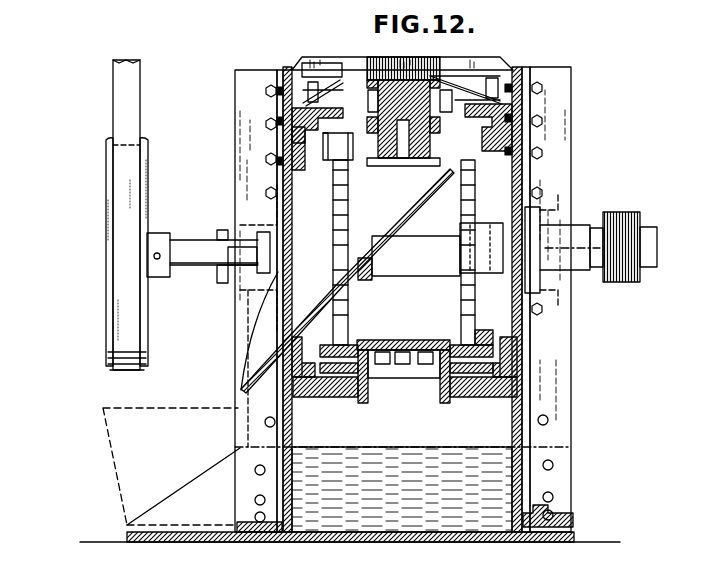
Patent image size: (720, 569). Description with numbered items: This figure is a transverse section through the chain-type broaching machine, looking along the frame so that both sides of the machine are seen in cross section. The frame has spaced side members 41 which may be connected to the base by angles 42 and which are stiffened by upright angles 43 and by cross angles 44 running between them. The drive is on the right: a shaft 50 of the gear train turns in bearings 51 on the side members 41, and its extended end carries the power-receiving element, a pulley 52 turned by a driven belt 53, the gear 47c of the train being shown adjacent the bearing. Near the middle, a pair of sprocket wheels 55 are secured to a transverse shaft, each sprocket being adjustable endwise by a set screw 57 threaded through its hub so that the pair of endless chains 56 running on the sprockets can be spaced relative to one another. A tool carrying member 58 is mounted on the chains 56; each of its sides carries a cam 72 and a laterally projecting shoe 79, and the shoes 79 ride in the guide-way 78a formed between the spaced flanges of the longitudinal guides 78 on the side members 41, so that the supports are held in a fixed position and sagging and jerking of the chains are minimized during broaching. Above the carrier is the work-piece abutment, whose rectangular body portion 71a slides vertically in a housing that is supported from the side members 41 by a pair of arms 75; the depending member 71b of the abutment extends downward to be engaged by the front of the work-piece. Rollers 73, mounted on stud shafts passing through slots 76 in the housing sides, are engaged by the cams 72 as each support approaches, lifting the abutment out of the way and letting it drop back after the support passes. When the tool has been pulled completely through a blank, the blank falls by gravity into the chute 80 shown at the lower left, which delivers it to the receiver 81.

The side members 41 is at (283, 134).
The angles 42 is at (268, 485).
The upright angles 43 is at (235, 97).
The cross angles 44 is at (402, 489).
The gear 47c is at (636, 238).
The shaft 50 is at (191, 243).
The bearings 51 is at (267, 267).
The pulley 52 is at (105, 306).
The driven belt 53 is at (118, 118).
The sprocket wheels 55 is at (470, 325).
The endless chains 56 is at (480, 340).
The set screw 57 is at (458, 225).
The tool carrying member 58 is at (375, 363).
The body portion 71a is at (392, 73).
The depending member 71b is at (418, 164).
The cams 72 is at (370, 112).
The rollers 73 is at (342, 105).
The arms 75 is at (296, 70).
The slots 76 is at (530, 67).
The guides 78 is at (283, 175).
The guide-way 78a is at (283, 158).
The shoe 79 is at (289, 68).
The chute 80 is at (392, 234).
The receiver 81 is at (110, 446).